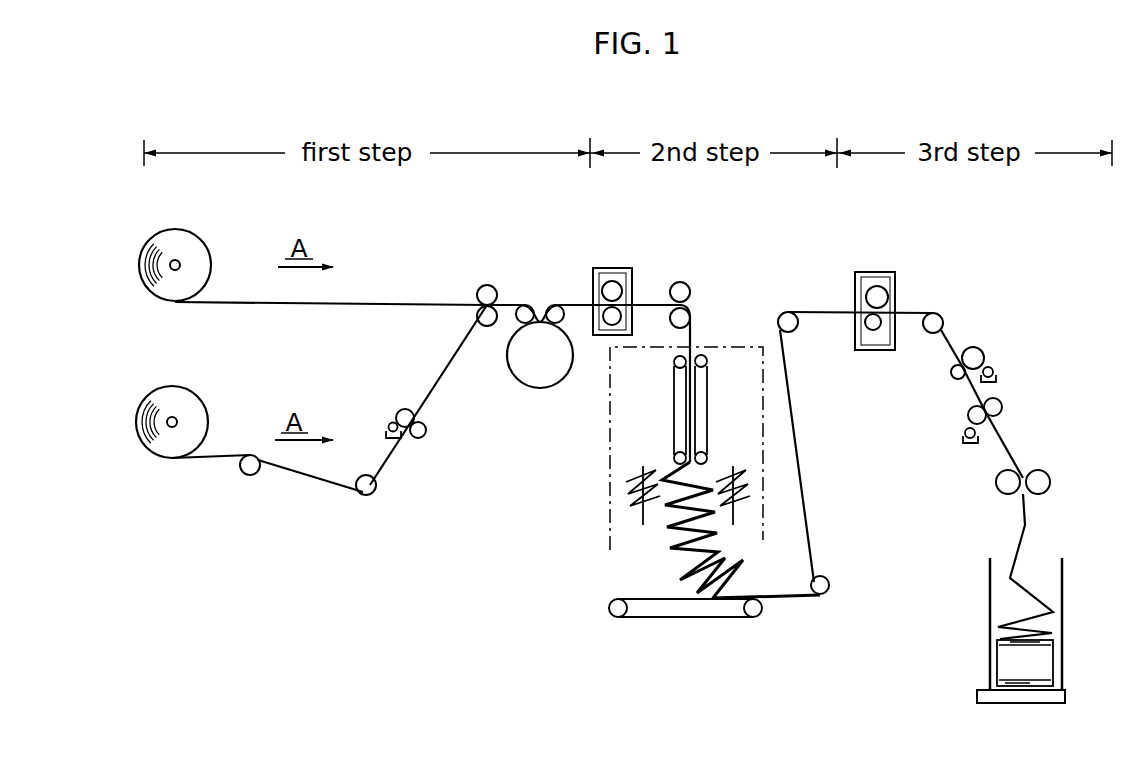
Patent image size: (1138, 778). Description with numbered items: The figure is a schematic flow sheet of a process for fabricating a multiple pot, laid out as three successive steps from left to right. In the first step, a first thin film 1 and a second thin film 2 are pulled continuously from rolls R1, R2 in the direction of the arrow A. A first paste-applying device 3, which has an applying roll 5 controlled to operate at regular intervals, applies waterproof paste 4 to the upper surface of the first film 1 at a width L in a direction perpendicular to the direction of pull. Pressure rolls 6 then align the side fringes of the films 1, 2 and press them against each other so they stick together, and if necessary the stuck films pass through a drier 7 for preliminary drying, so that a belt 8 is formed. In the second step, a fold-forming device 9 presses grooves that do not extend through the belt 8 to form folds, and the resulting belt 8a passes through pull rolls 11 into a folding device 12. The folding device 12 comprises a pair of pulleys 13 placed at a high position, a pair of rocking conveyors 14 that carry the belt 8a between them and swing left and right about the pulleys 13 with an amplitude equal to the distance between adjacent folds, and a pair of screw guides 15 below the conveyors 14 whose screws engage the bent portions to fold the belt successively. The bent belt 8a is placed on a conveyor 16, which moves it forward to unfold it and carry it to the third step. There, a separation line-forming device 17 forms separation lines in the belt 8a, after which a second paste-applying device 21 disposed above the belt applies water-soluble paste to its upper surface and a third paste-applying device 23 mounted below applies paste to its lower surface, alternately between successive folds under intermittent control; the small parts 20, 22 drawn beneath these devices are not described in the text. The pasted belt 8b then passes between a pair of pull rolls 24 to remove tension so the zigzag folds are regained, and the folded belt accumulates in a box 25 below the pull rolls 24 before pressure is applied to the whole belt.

The roll R1 is at (209, 407).
The roll R2 is at (205, 247).
The first thin film 1 is at (226, 462).
The second thin film 2 is at (291, 307).
The first paste-applying device 3 is at (408, 402).
The waterproof paste 4 is at (382, 426).
The applying roll 5 is at (399, 410).
The pressure rolls 6 is at (490, 284).
The drier 7 is at (545, 381).
The belt 8 is at (572, 300).
The belt having folds 8a is at (652, 303).
The belt 8b is at (1016, 447).
The fold-forming device 9 is at (618, 280).
The pull rolls 11 is at (690, 290).
The folding device 12 is at (710, 340).
The pulleys 13 is at (673, 362).
The rocking conveyors 14 is at (672, 412).
The screw guides 15 is at (640, 516).
The conveyor 16 is at (693, 624).
The separation line-forming device 17 is at (880, 272).
The coating device 20 is at (993, 360).
The second paste-applying device 21 is at (979, 346).
The coating device 22 is at (966, 424).
The third paste-applying device 23 is at (958, 409).
The pull rolls 24 is at (1054, 482).
The box 25 is at (1066, 660).